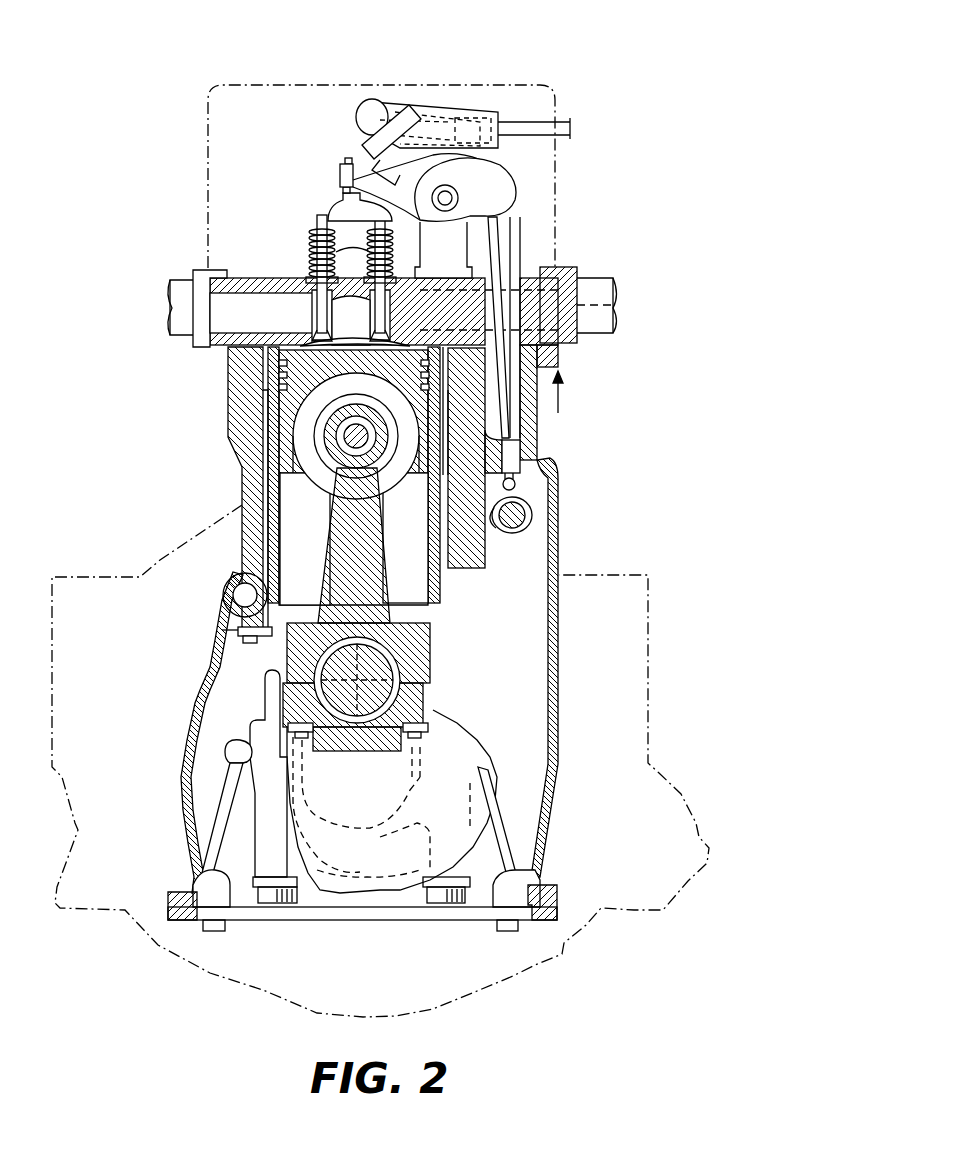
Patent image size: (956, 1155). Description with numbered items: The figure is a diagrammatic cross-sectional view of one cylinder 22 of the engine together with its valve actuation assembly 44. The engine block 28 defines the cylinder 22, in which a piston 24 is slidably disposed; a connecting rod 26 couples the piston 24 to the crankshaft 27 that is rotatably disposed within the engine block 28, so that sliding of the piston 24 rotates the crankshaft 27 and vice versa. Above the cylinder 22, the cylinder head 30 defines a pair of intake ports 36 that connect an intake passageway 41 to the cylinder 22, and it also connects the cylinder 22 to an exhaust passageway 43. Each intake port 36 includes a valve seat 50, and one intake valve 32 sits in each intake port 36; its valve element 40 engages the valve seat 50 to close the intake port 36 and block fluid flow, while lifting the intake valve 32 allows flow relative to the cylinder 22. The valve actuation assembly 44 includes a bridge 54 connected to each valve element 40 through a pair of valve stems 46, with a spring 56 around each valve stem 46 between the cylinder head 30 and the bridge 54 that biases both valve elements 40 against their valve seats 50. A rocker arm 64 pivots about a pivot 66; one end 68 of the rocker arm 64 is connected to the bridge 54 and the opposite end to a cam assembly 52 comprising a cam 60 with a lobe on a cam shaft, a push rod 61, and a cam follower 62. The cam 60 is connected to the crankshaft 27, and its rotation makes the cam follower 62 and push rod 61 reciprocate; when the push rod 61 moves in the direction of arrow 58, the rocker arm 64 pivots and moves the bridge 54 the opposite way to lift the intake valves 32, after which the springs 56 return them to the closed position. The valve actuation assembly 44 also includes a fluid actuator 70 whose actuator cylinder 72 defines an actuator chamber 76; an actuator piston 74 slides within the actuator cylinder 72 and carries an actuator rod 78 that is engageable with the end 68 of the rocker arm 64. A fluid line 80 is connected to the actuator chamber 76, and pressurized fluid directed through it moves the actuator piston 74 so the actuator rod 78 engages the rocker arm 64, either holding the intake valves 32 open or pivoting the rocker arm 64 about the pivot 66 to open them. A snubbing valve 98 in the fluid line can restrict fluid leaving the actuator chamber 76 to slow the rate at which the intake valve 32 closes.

The cylinder 22 is at (288, 503).
The piston 24 is at (280, 450).
The connecting rod 26 is at (370, 595).
The crankshaft 27 is at (466, 742).
The engine block 28 is at (245, 545).
The cylinder head 30 is at (557, 342).
The intake valve 32 is at (317, 293).
The intake port 36 is at (317, 333).
The valve element 40 is at (212, 370).
The intake passageway 41 is at (217, 307).
The exhaust passageway 43 is at (603, 300).
The valve actuation assembly 44 is at (586, 83).
The valve stem 46 is at (310, 262).
The valve seat 50 is at (300, 378).
The cam assembly 52 is at (630, 428).
The bridge 54 is at (343, 201).
The spring 56 is at (330, 212).
The arrow 58 is at (563, 402).
The cam 60 is at (493, 533).
The push rod 61 is at (508, 420).
The cam follower 62 is at (516, 483).
The rocker arm 64 is at (490, 186).
The pivot 66 is at (445, 185).
The end of rocker arm 68 is at (342, 170).
The fluid actuator 70 is at (404, 94).
The actuator cylinder 72 is at (370, 112).
The actuator piston 74 is at (372, 100).
The actuator chamber 76 is at (425, 128).
The actuator rod 78 is at (366, 150).
The fluid line 80 is at (500, 120).
The snubbing valve 98 is at (478, 116).